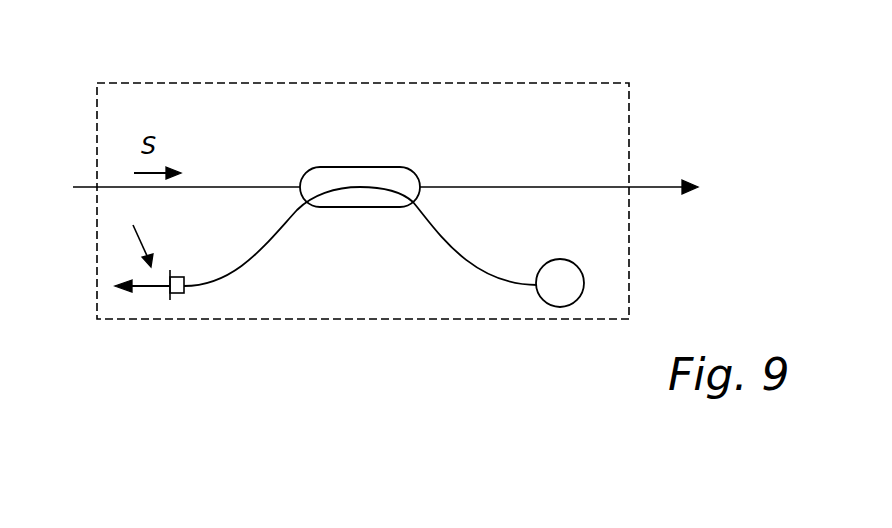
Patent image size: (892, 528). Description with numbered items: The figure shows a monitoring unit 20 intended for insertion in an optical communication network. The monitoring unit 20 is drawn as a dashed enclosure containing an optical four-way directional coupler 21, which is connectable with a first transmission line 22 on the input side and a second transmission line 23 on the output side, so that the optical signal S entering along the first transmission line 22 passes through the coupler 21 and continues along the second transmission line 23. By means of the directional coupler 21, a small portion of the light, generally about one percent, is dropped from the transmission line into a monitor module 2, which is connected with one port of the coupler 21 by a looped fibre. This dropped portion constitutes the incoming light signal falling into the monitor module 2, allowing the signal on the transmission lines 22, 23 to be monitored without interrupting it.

The monitoring unit 20 is at (150, 82).
The first transmission line 22 is at (260, 183).
The optical four-way directional coupler 21 is at (368, 165).
The second transmission line 23 is at (498, 185).
The monitor module 2 is at (582, 253).